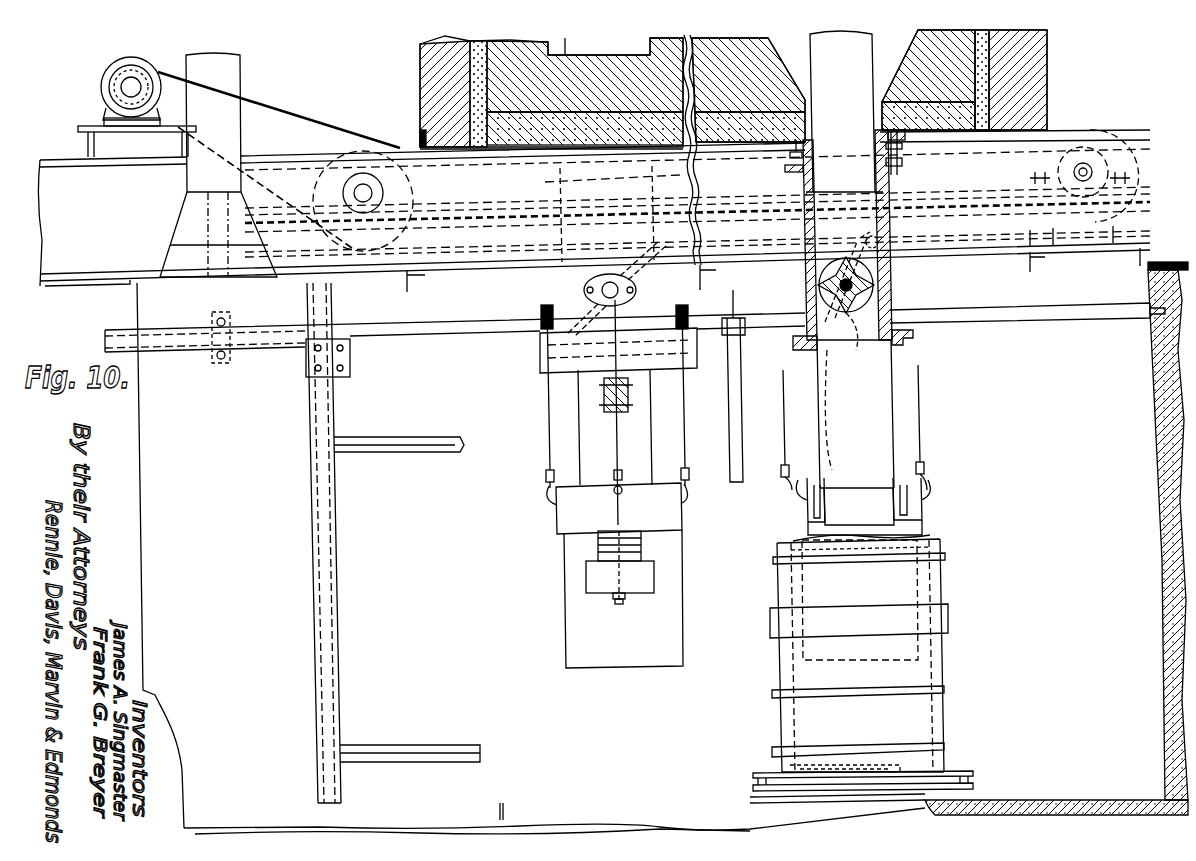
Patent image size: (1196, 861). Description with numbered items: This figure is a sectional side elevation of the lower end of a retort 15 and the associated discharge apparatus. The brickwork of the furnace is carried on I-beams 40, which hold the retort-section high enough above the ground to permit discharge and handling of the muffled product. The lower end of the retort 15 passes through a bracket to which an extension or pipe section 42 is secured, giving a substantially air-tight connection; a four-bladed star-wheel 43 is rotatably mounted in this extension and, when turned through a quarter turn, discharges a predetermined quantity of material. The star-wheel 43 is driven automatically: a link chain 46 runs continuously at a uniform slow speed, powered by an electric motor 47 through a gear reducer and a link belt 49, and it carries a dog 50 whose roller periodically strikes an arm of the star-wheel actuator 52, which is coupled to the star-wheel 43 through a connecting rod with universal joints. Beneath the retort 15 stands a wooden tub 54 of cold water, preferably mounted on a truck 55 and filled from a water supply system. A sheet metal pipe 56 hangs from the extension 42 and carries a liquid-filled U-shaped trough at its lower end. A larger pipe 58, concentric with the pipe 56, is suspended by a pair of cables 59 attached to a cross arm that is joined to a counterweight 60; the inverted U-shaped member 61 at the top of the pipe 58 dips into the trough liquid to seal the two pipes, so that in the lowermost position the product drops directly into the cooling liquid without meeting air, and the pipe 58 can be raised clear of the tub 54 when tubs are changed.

The retort 15 is at (812, 82).
The I-beams 40 is at (1122, 142).
The extension or pipe section 42 is at (805, 292).
The star-wheel 43 is at (855, 414).
The link belt or chain 46 is at (697, 196).
The electric motor 47 is at (100, 82).
The link belt 49 is at (272, 104).
The dog 50 is at (880, 225).
The star-wheel actuator 52 is at (895, 292).
The tub 54 is at (945, 666).
The truck 55 is at (770, 786).
The sheet metal pipe 56 is at (736, 340).
The pipe 58 is at (573, 568).
The cables 59 is at (545, 438).
The counterweight 60 is at (652, 583).
The inverted U-shaped member 61 is at (560, 518).